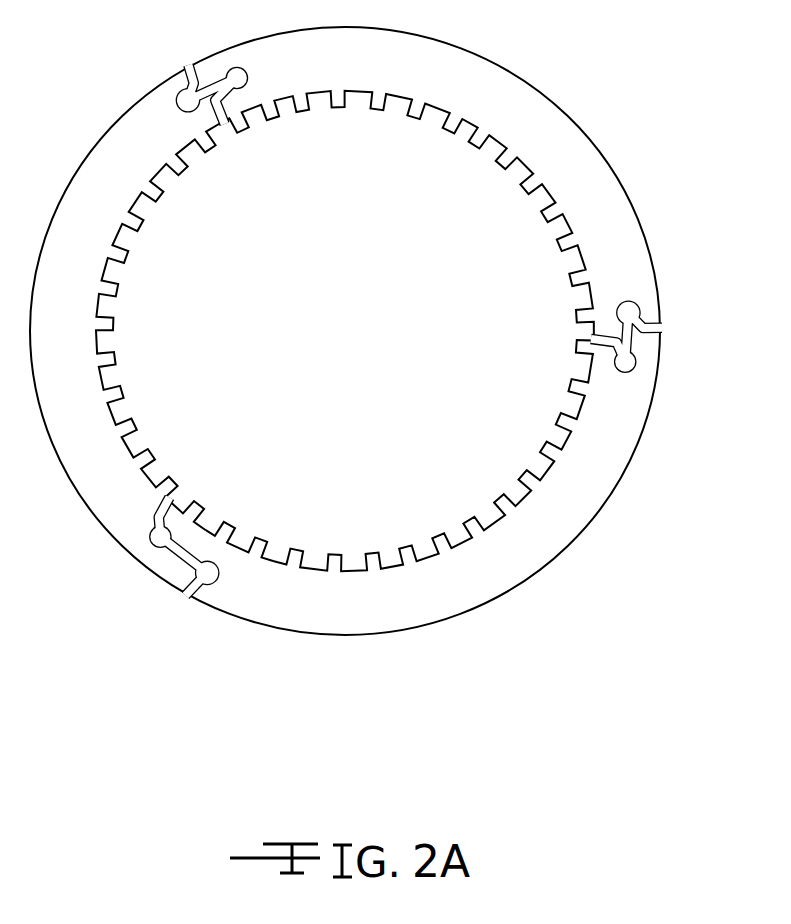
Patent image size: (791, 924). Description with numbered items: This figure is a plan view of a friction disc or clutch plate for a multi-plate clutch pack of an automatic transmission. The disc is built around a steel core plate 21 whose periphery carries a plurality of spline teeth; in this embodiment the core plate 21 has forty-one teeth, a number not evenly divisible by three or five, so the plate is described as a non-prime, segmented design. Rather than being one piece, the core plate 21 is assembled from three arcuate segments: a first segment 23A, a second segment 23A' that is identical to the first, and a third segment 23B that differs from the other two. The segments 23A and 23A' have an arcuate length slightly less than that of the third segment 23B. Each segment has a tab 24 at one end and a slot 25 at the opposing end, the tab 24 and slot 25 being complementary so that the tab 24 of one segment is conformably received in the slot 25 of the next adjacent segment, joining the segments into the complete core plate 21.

The core plate 21 is at (84, 162).
The first segment 23A is at (136, 326).
The second segment 23A' is at (408, 215).
The third segment 23B is at (552, 546).
The tab 24 is at (243, 557).
The slot 25 is at (172, 490).